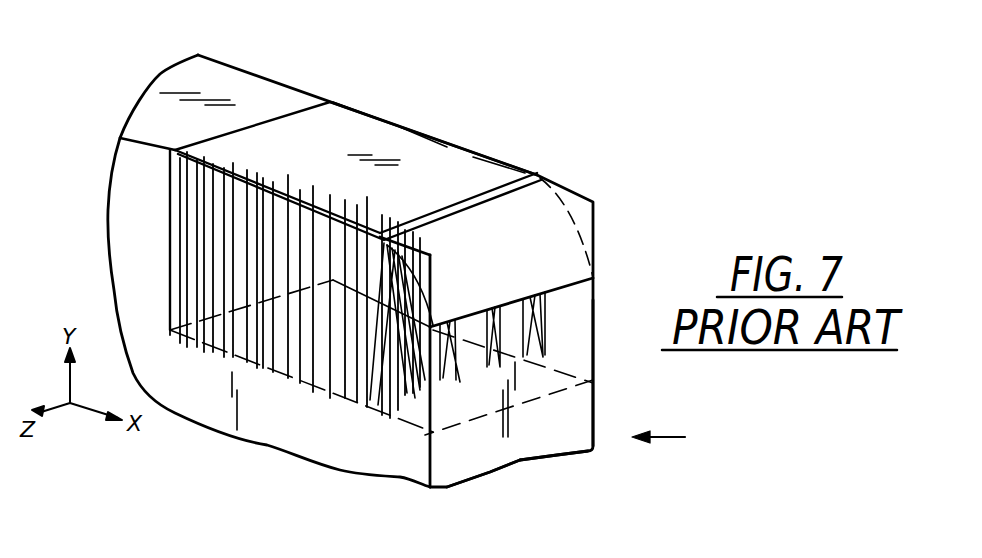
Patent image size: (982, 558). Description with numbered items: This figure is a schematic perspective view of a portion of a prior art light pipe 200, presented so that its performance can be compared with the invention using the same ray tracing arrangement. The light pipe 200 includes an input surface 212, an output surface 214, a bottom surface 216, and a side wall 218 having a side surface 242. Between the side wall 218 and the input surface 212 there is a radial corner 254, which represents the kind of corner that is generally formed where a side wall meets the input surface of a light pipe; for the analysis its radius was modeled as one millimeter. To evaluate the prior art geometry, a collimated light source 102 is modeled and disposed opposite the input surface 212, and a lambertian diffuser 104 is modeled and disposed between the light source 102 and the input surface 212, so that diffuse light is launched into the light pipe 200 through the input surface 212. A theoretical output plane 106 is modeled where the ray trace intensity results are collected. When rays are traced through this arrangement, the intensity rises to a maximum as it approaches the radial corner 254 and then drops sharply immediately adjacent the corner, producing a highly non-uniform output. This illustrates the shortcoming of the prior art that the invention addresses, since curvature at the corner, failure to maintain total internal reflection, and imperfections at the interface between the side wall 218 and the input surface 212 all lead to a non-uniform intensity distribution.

The collimated light source 102 is at (475, 119).
The lambertian diffuser 104 is at (292, 123).
The theoretical output plane 106 is at (340, 400).
The light pipe 200 is at (686, 442).
The input surface 212 is at (207, 100).
The output surface 214 is at (233, 420).
The bottom surface 216 is at (598, 398).
The side wall 218 is at (548, 449).
The side surface 242 is at (483, 467).
The radial corner 254 is at (598, 228).